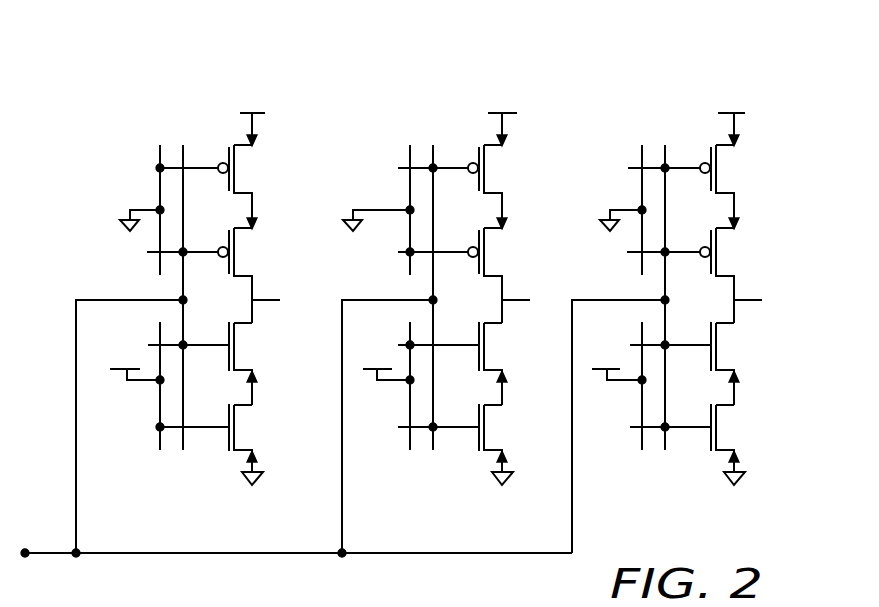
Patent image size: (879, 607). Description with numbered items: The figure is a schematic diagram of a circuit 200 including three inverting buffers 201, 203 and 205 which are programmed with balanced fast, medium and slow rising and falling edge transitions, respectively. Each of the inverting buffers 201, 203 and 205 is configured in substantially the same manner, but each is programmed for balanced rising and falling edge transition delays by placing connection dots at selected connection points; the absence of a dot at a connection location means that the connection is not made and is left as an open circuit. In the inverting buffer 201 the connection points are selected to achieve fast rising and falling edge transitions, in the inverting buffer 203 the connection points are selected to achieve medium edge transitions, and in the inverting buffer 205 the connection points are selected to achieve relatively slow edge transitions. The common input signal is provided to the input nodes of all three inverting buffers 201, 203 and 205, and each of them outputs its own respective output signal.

The circuit 200 is at (121, 59).
The inverting buffer 201 is at (306, 164).
The inverting buffer 203 is at (556, 163).
The inverting buffer 205 is at (788, 165).